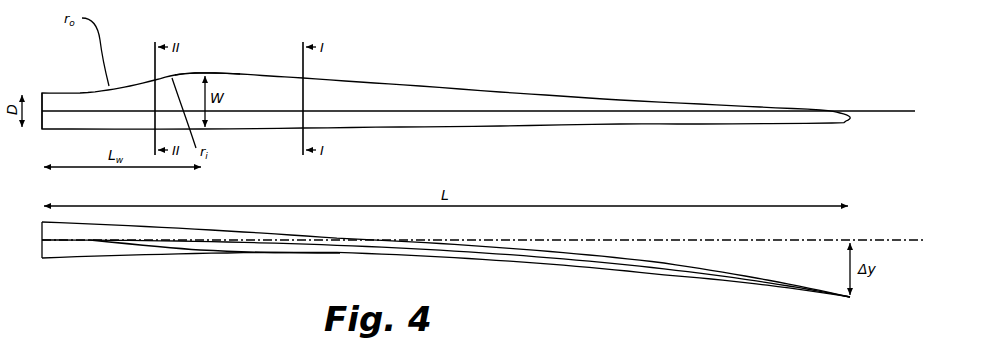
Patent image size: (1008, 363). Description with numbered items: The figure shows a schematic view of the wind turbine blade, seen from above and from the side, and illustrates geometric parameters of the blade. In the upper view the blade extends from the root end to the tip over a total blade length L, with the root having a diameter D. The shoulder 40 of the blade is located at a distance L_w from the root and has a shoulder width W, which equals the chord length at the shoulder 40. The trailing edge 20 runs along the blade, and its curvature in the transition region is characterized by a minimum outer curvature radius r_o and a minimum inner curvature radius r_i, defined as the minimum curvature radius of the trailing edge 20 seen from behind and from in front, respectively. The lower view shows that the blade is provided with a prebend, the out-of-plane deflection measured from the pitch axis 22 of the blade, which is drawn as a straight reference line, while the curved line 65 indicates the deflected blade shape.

The trailing edge 20 is at (331, 249).
The pitch axis 22 is at (362, 109).
The shoulder 40 is at (205, 74).
The bending line 65 is at (197, 250).